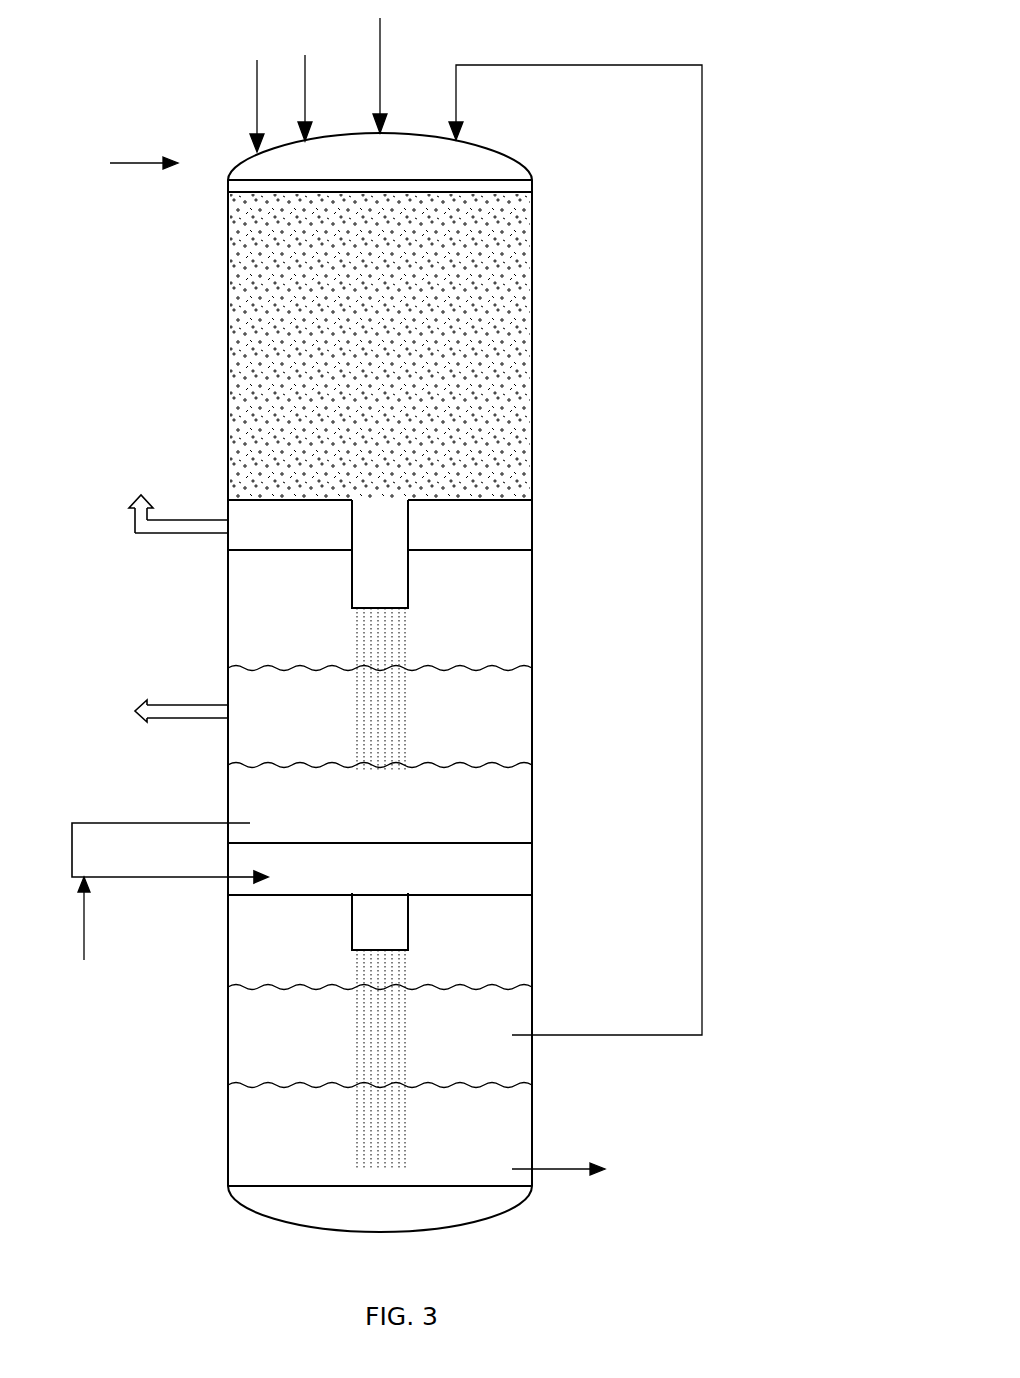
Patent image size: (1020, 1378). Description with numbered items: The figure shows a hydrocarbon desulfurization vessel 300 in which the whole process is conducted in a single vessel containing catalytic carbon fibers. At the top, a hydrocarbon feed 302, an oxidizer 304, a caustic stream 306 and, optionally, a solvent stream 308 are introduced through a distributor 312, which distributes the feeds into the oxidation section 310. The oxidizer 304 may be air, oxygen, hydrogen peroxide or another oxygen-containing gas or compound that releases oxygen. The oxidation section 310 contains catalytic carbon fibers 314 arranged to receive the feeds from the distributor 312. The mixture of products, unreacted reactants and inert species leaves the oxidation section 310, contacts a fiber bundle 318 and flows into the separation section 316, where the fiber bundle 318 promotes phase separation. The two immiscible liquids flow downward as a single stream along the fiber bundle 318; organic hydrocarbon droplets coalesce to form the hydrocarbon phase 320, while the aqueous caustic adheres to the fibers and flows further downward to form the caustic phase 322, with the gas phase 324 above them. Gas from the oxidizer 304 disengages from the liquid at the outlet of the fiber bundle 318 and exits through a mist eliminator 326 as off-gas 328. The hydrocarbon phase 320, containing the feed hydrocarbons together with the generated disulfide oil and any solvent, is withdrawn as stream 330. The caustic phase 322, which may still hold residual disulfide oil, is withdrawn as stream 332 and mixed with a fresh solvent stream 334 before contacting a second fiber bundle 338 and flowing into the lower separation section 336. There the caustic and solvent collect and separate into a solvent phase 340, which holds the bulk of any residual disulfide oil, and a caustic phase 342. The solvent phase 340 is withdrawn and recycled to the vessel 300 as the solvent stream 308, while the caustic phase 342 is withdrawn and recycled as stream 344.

The hydrocarbon desulfurization vessel 300 is at (116, 163).
The hydrocarbon feed 302 is at (382, 66).
The oxidizer 304 is at (310, 80).
The caustic stream 306 is at (259, 95).
The solvent stream 308 is at (702, 550).
The oxidation section 310 is at (532, 325).
The distributor 312 is at (532, 186).
The catalytic carbon fibers 314 is at (245, 275).
The separation section 316 is at (532, 605).
The fiber bundle 318 is at (385, 528).
The hydrocarbon phase 320 is at (512, 704).
The caustic phase 322 is at (507, 801).
The gas phase 324 is at (502, 585).
The mist eliminator 326 is at (267, 552).
The off-gas 328 is at (190, 518).
The stream 330 is at (188, 705).
The stream 332 is at (207, 823).
The fresh solvent stream 334 is at (91, 935).
The separation section 336 is at (532, 948).
The fiber bundle 338 is at (385, 930).
The solvent phase 340 is at (380, 1022).
The caustic phase 342 is at (380, 1121).
The stream 344 is at (564, 1189).